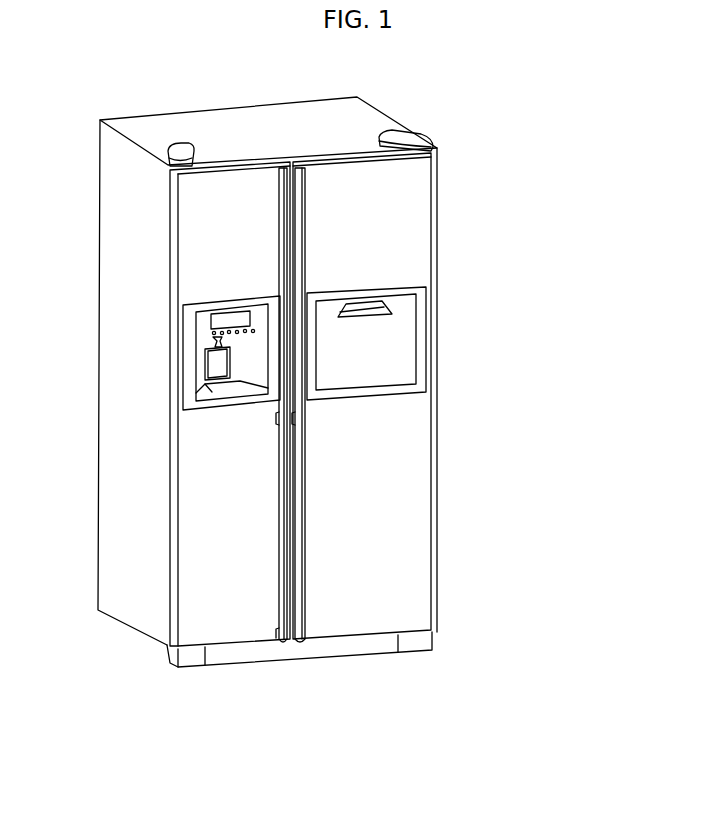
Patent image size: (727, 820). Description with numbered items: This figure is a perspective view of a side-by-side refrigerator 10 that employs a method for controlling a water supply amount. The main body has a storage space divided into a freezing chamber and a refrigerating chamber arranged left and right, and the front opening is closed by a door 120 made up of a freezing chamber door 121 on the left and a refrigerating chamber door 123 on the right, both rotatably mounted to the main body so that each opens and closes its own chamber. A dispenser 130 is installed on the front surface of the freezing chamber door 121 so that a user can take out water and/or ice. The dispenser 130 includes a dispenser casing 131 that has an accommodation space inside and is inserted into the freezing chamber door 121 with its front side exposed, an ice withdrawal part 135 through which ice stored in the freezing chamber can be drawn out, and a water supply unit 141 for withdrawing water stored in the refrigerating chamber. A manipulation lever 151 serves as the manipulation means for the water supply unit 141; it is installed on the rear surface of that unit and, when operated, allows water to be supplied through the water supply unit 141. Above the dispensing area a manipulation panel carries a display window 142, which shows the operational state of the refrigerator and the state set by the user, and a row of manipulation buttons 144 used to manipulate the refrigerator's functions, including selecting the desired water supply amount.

The refrigerator 10 is at (235, 124).
The door 120 is at (319, 731).
The freezing chamber door 121 is at (242, 620).
The refrigerating chamber door 123 is at (330, 618).
The dispenser 130 is at (48, 345).
The dispenser casing 131 is at (205, 396).
The ice withdrawal part 135 is at (213, 343).
The water supply unit 141 is at (205, 353).
The display window 142 is at (225, 300).
The manipulation buttons 144 is at (205, 332).
The manipulation lever 151 is at (222, 367).